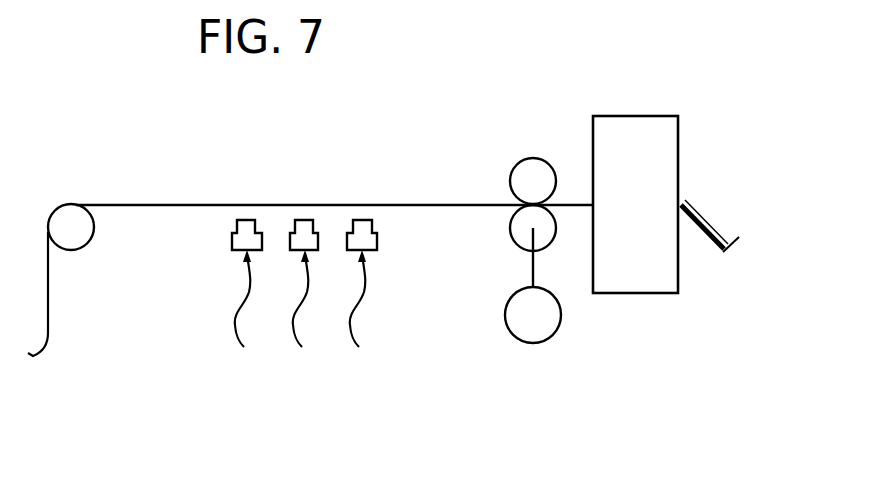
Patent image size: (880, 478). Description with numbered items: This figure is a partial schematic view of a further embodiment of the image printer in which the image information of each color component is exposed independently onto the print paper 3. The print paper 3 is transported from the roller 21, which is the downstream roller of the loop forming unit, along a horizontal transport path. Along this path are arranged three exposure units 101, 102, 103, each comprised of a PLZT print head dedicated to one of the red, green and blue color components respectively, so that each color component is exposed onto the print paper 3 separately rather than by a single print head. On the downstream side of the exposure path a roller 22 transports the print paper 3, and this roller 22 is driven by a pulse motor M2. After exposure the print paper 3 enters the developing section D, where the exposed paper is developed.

The print paper 3 is at (477, 203).
The roller 21 is at (80, 217).
The roller 22 is at (533, 165).
The exposure unit 101 is at (232, 243).
The exposure unit 102 is at (306, 220).
The exposure unit 103 is at (362, 220).
The pulse motor M2 is at (520, 342).
The developing section D is at (626, 296).